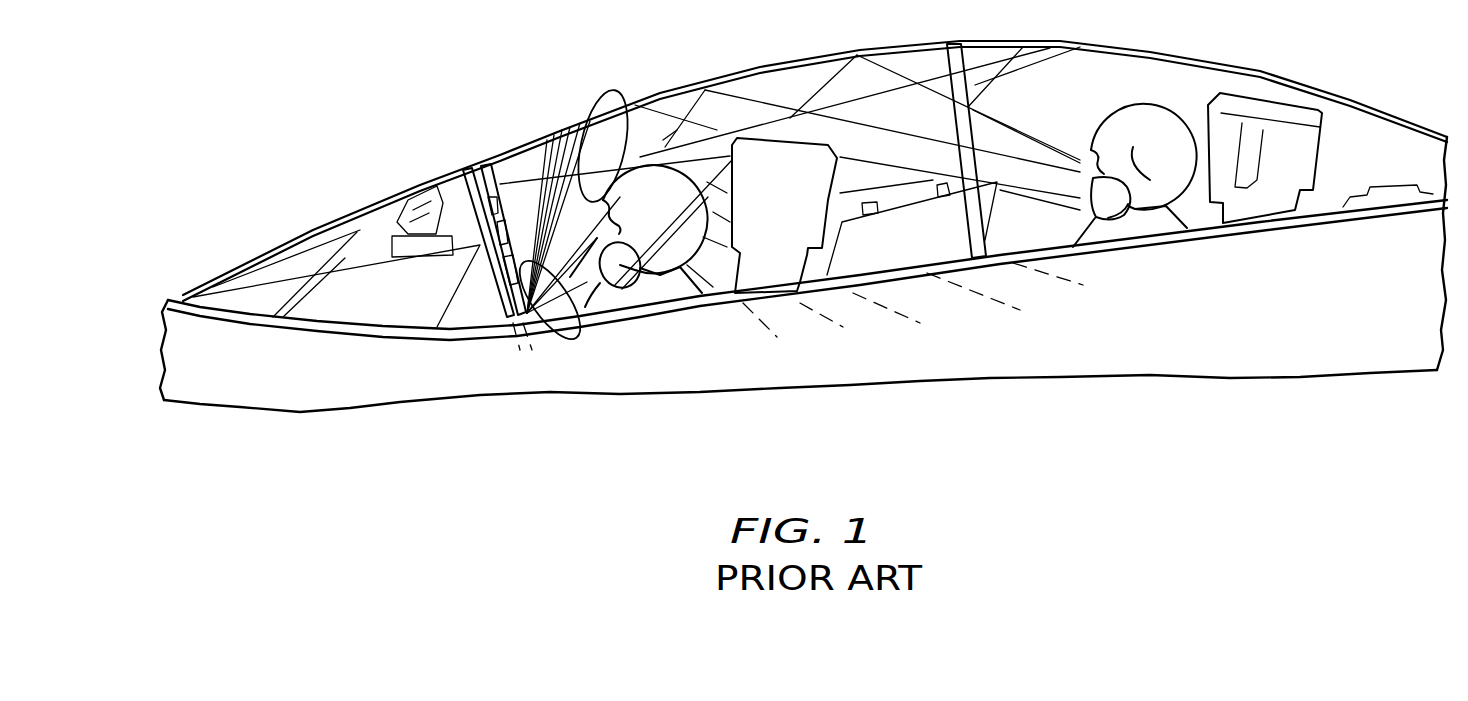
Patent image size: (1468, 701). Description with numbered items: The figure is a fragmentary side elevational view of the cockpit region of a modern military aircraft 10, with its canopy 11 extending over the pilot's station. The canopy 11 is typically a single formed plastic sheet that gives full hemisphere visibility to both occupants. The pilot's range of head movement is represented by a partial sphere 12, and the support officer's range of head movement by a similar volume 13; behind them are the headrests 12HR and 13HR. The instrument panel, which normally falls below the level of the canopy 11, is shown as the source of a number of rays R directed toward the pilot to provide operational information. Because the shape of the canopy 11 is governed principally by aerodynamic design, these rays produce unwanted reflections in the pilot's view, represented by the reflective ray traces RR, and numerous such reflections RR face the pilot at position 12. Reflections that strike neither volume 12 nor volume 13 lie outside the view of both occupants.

The military aircraft 10 is at (1122, 343).
The canopy 11 is at (1326, 60).
The partial sphere representing pilot's range of head movement 12 is at (653, 167).
The headrest 12HR is at (790, 142).
The partial sphere representing support officer's range of head movement 13 is at (1145, 105).
The headrest 13HR is at (1238, 97).
The rays R is at (570, 328).
The reflective ray traces RR is at (603, 95).